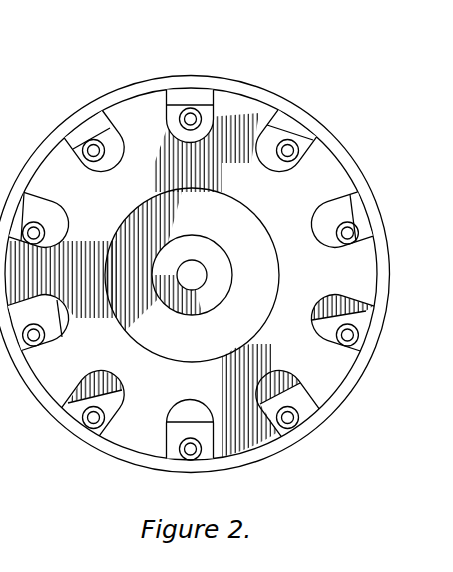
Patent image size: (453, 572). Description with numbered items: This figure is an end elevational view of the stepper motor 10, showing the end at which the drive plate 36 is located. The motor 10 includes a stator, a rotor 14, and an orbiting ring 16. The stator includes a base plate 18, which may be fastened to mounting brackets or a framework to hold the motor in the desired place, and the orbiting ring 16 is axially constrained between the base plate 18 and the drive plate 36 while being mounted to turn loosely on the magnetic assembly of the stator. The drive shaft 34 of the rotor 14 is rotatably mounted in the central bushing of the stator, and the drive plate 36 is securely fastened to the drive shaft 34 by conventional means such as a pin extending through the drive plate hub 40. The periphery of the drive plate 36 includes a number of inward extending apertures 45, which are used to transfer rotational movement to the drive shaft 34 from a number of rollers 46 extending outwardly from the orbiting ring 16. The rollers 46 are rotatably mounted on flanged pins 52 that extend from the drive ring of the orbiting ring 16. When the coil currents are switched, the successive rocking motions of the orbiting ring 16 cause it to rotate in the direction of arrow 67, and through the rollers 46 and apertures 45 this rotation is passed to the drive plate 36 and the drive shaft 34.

The stepper motor 10 is at (298, 473).
The rotor 14 is at (333, 147).
The orbiting ring 16 is at (96, 129).
The base plate 18 is at (128, 82).
The drive shaft 34 is at (203, 262).
The drive plate 36 is at (112, 214).
The drive plate hub 40 is at (227, 296).
The inward extending apertures 45 is at (269, 116).
The rollers 46 is at (202, 118).
The flanged pins 52 is at (192, 108).
The arrow 67 is at (336, 449).